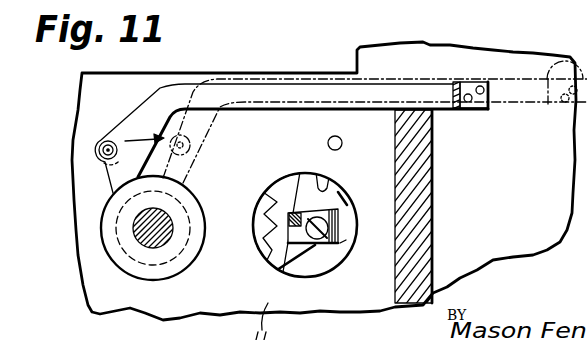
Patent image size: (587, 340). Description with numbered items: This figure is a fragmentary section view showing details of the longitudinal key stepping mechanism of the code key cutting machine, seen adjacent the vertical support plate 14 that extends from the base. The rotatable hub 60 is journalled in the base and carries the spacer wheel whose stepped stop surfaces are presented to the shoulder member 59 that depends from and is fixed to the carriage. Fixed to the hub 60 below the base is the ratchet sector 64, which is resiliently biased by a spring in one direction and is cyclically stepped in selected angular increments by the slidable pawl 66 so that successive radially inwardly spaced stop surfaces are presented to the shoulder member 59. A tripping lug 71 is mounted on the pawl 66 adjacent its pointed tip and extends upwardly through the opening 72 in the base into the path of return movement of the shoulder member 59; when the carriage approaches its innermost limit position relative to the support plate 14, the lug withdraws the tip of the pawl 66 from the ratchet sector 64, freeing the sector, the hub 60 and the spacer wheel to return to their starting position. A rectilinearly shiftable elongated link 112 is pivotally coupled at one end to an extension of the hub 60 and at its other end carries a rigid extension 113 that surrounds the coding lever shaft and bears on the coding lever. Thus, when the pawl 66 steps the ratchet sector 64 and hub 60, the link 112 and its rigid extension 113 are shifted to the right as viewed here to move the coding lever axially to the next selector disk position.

The support plate 14 is at (420, 203).
The link 112 is at (196, 94).
The rigid extension 113 is at (452, 97).
The hub 60 is at (188, 205).
The ratchet sector 64 is at (253, 228).
The shoulder member 59 is at (300, 212).
The pawl 66 is at (300, 262).
The tripping lug 71 is at (340, 222).
The opening 72 is at (345, 259).